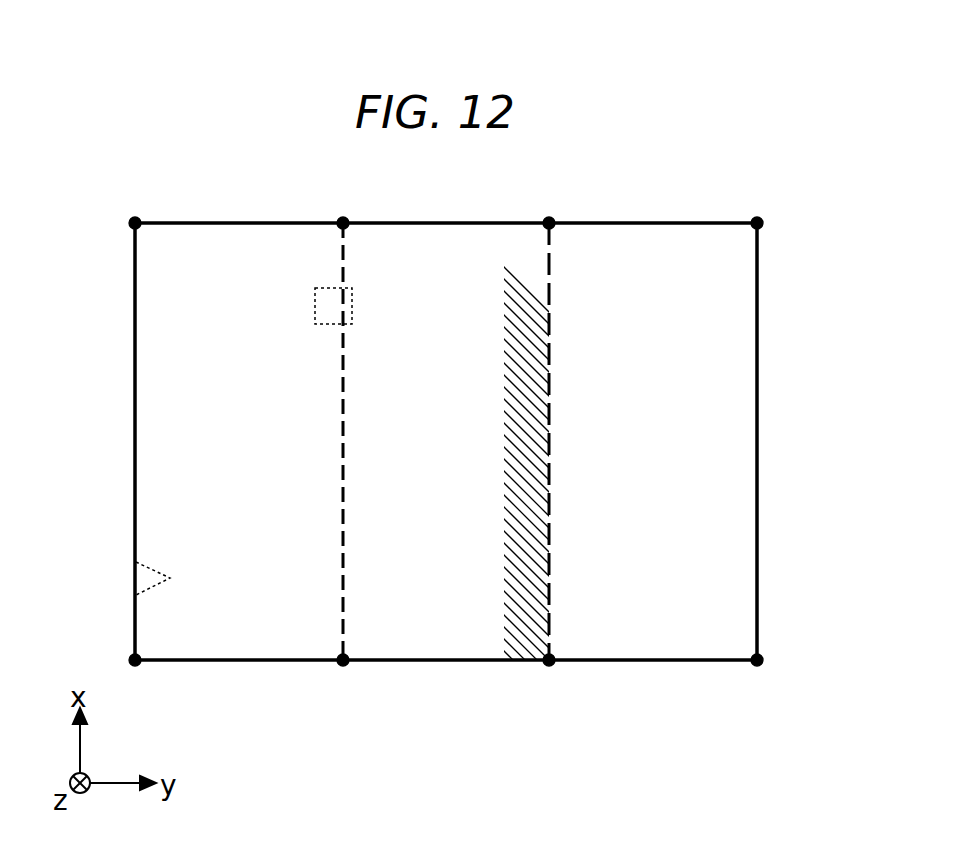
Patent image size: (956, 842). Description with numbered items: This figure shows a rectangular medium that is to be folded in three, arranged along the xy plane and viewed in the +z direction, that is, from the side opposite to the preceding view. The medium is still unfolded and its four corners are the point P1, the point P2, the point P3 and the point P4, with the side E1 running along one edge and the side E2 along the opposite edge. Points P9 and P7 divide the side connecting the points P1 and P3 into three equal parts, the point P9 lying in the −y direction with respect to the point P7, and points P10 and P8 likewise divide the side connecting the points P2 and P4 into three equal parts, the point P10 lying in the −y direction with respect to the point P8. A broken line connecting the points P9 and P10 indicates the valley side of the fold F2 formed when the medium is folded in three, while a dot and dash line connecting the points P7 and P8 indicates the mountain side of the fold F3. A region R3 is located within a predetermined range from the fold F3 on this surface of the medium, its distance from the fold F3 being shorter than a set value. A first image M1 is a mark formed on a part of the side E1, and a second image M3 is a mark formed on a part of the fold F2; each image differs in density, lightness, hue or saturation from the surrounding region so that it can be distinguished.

The point P1 is at (758, 663).
The point P2 is at (759, 221).
The point P3 is at (136, 663).
The point P4 is at (135, 221).
The point P7 is at (550, 663).
The point P8 is at (551, 221).
The point P9 is at (344, 663).
The point P10 is at (345, 221).
The side E1 is at (134, 460).
The side E2 is at (758, 485).
The fold F2 is at (341, 408).
The fold F3 is at (552, 455).
The region R3 is at (542, 332).
The first image M1 is at (128, 578).
The second image M3 is at (323, 272).